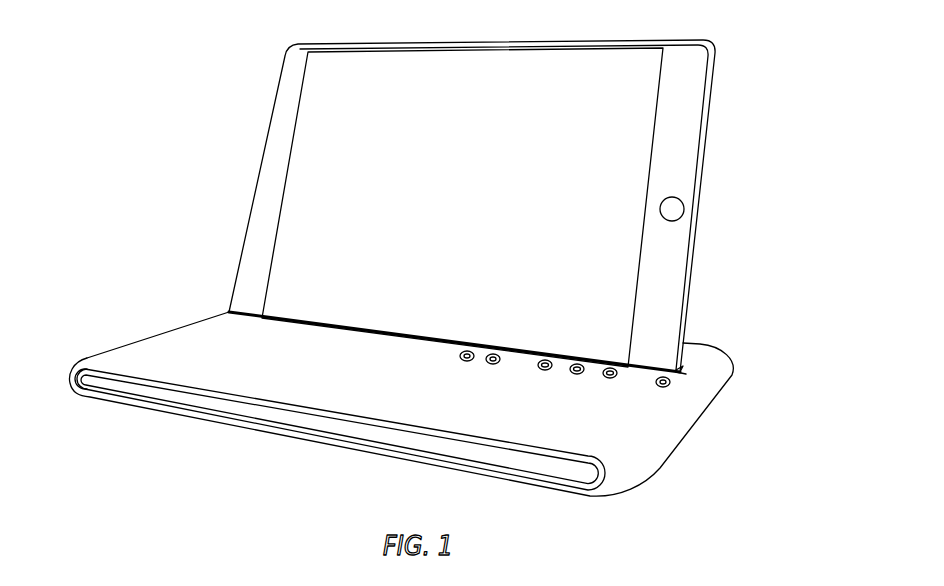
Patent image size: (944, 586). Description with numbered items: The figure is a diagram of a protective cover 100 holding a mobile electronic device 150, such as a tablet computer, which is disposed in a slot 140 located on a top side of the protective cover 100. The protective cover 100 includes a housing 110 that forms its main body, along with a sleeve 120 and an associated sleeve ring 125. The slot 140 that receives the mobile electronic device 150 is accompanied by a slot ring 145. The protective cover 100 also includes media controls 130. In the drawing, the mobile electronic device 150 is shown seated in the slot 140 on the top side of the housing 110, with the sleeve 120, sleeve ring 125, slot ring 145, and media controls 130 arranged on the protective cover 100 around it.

The protective cover 100 is at (447, 278).
The housing 110 is at (197, 342).
The sleeve 120 is at (535, 463).
The sleeve ring 125 is at (88, 375).
The media controls 130 is at (673, 388).
The slot 140 is at (682, 370).
The slot ring 145 is at (683, 371).
The mobile electronic device 150 is at (712, 105).